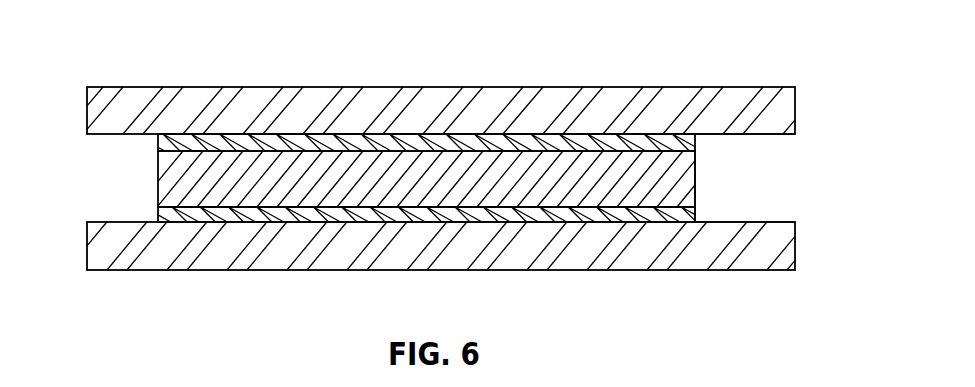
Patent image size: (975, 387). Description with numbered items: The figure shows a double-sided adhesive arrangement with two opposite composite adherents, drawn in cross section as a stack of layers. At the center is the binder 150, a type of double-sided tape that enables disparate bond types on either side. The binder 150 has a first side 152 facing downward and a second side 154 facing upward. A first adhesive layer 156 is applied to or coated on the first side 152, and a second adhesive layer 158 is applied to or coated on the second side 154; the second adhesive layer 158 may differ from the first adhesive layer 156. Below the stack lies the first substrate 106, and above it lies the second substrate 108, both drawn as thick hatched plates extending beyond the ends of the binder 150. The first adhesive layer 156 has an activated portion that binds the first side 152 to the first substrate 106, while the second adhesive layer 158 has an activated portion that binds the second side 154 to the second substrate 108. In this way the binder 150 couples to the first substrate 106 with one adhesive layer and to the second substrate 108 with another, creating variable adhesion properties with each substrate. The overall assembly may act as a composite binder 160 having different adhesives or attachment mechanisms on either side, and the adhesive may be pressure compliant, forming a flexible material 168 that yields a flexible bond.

The second substrate 108 is at (163, 87).
The first substrate 106 is at (165, 270).
The binder 150 is at (160, 162).
The second adhesive layer 158 is at (160, 143).
The first adhesive layer 156 is at (160, 213).
The composite binder 160 is at (778, 145).
The second side 154 is at (708, 157).
The first side 152 is at (708, 210).
The flexible material 168 is at (805, 212).